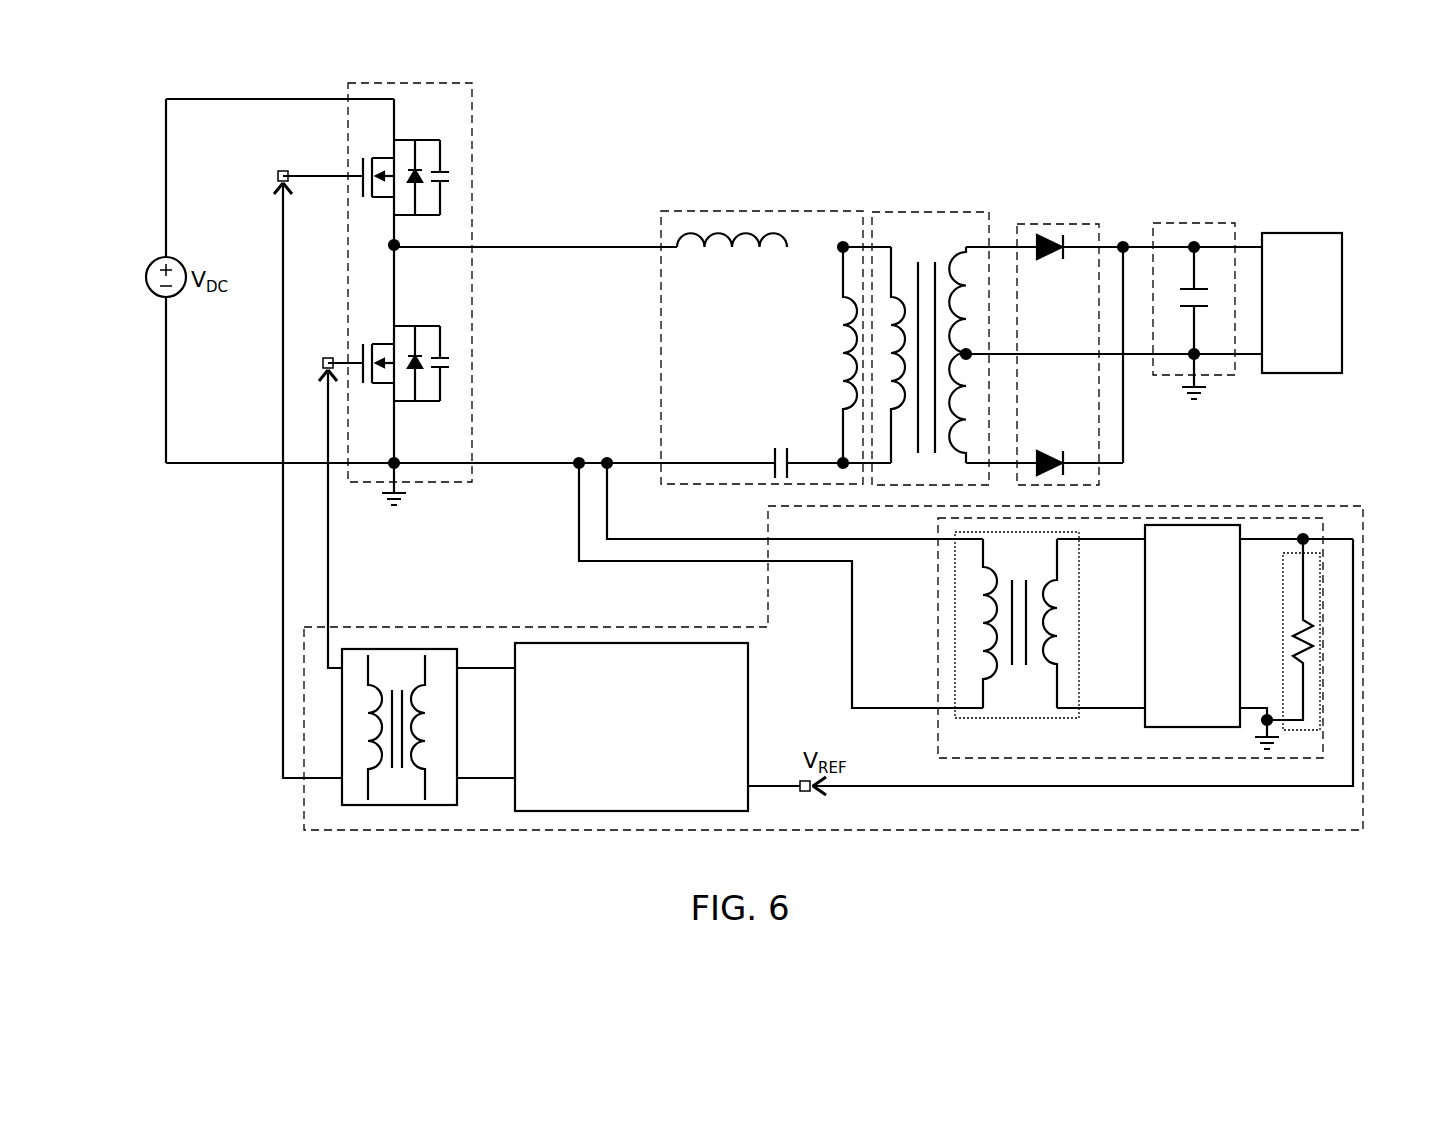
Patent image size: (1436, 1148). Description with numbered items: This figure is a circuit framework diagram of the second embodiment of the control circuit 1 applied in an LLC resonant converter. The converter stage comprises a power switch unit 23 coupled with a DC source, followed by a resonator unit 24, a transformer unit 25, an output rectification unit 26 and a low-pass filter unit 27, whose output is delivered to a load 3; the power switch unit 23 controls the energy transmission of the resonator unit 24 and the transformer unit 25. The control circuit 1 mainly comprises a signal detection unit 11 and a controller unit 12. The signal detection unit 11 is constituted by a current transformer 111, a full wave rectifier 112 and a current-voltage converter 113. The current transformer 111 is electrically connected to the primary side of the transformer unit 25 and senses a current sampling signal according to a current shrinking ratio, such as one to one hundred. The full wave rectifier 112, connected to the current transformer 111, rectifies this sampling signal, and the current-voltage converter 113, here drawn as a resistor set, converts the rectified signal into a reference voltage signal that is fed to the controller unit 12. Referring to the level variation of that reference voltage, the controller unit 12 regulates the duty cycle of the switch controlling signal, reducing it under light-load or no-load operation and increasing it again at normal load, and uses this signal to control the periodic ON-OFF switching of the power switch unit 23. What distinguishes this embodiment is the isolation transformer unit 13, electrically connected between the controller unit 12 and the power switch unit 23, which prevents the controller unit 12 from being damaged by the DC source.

The control circuit 1 is at (304, 808).
The load 3 is at (1283, 237).
The signal detection unit 11 is at (936, 616).
The controller unit 12 is at (750, 660).
The isolation transformer unit 13 is at (447, 805).
The power switch unit 23 is at (472, 130).
The resonator unit 24 is at (742, 211).
The transformer unit 25 is at (923, 211).
The output rectification unit 26 is at (1017, 228).
The low-pass filter unit 27 is at (1153, 228).
The current transformer 111 is at (1018, 710).
The full wave rectifier 112 is at (1183, 713).
The current-voltage converter 113 is at (1318, 553).